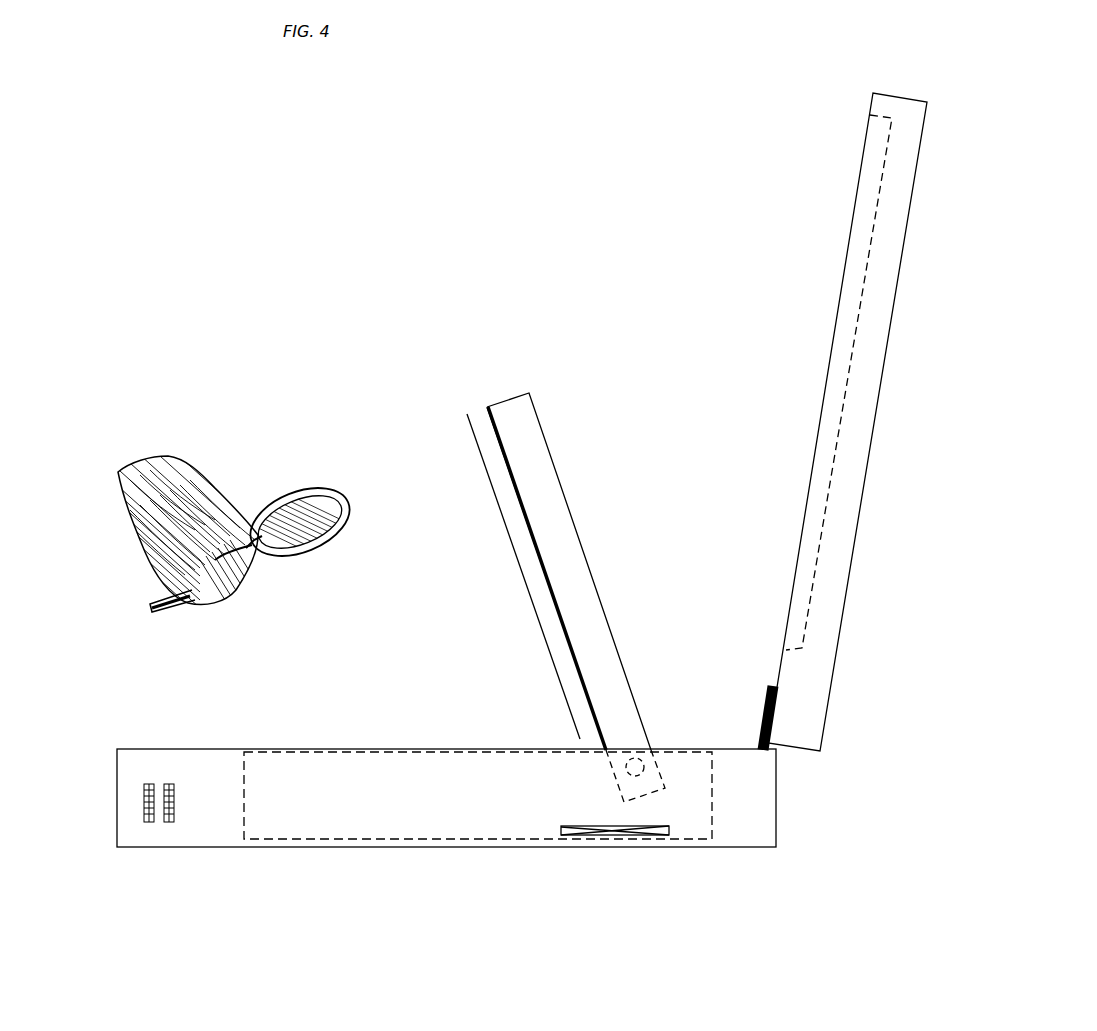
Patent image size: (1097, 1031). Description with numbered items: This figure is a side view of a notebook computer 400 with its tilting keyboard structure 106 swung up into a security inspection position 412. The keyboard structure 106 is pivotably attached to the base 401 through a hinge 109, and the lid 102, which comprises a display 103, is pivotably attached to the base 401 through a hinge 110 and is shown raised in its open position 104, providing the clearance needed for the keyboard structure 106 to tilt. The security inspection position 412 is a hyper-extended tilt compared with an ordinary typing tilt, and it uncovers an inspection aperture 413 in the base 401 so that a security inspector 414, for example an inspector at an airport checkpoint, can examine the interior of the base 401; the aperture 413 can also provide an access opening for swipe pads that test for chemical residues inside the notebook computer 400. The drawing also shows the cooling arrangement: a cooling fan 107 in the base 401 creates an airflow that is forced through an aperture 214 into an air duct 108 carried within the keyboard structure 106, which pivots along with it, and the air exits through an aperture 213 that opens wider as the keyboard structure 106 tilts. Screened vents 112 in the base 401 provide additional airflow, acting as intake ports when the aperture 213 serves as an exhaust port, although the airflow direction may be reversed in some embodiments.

The notebook computer 400 is at (292, 200).
The base 401 is at (212, 836).
The screened vents 112 is at (146, 822).
The inspection aperture 413 is at (550, 710).
The cooling fan 107 is at (577, 838).
The keyboard structure 106 is at (557, 493).
The air duct 108 is at (520, 538).
The aperture 213 is at (482, 392).
The aperture 214 is at (597, 803).
The hinge 109 is at (636, 771).
The hinge 110 is at (767, 752).
The lid 102 is at (778, 655).
The display 103 is at (810, 527).
The open position 104 is at (835, 82).
The security inspection position 412 is at (518, 302).
The security inspector 414 is at (173, 477).